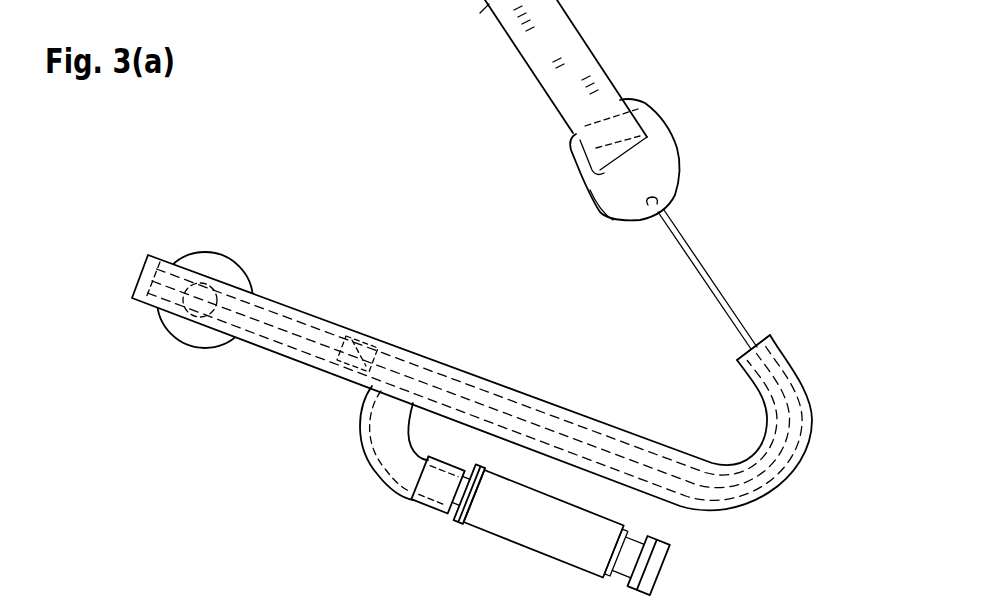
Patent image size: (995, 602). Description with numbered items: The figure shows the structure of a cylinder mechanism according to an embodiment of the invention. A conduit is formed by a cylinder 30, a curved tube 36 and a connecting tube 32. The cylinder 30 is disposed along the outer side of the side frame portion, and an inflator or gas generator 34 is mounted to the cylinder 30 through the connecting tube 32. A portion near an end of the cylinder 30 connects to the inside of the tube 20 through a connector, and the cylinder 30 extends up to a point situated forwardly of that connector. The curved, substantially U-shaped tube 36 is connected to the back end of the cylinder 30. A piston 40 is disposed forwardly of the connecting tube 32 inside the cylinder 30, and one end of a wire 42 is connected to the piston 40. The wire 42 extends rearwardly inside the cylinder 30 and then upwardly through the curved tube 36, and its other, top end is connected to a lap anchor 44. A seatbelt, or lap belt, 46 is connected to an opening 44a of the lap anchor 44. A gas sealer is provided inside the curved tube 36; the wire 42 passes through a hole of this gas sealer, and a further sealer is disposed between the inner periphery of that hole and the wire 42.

The tube 20 is at (222, 243).
The cylinder 30 is at (513, 390).
The connecting tube 32 is at (363, 453).
The inflator or gas generator 34 is at (502, 540).
The curved tube 36 is at (797, 373).
The piston 40 is at (336, 323).
The wire 42 is at (705, 262).
The lap anchor 44 is at (673, 147).
The opening 44a is at (607, 197).
The seatbelt 46 is at (598, 62).